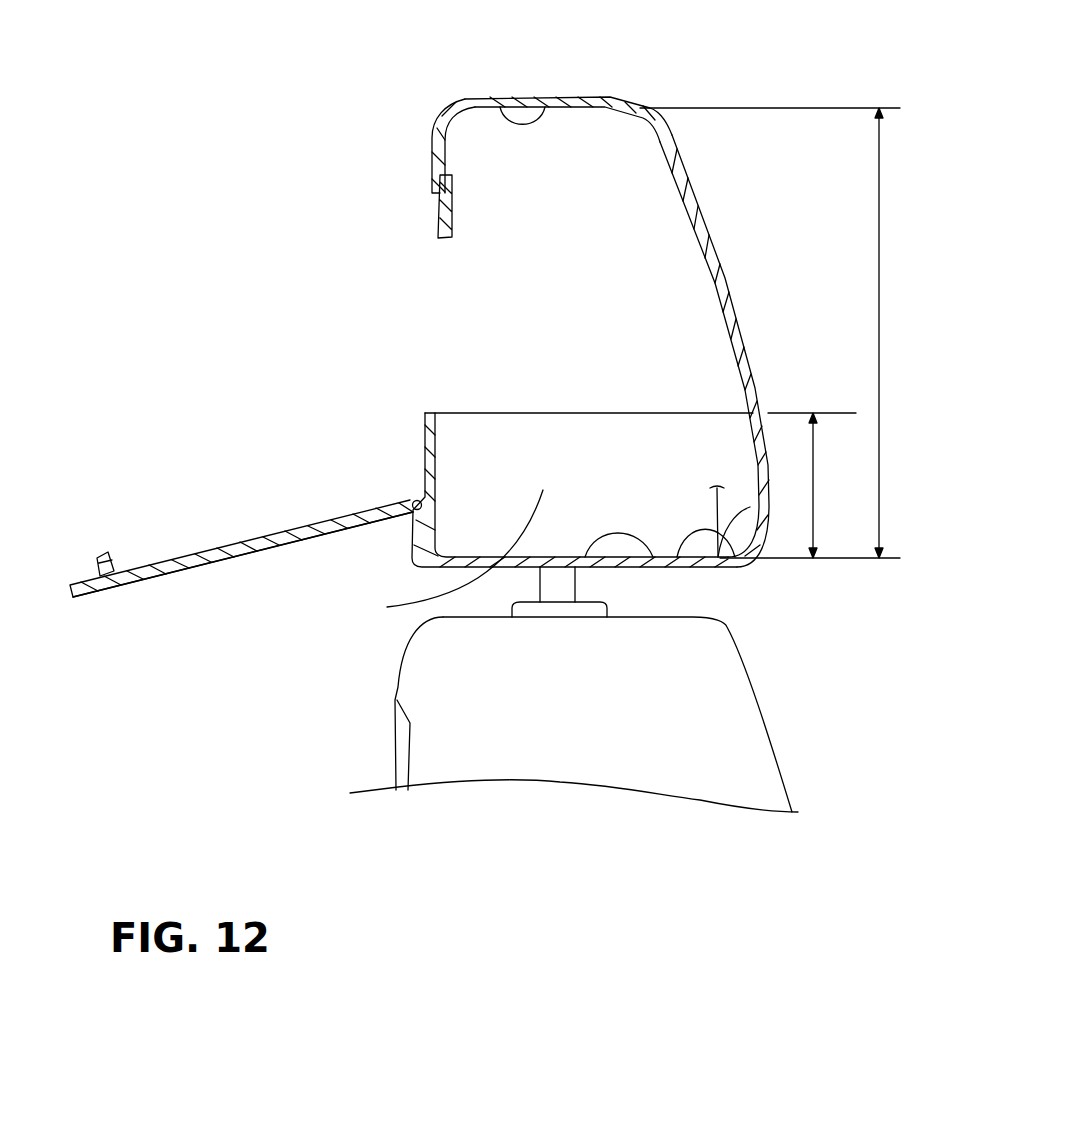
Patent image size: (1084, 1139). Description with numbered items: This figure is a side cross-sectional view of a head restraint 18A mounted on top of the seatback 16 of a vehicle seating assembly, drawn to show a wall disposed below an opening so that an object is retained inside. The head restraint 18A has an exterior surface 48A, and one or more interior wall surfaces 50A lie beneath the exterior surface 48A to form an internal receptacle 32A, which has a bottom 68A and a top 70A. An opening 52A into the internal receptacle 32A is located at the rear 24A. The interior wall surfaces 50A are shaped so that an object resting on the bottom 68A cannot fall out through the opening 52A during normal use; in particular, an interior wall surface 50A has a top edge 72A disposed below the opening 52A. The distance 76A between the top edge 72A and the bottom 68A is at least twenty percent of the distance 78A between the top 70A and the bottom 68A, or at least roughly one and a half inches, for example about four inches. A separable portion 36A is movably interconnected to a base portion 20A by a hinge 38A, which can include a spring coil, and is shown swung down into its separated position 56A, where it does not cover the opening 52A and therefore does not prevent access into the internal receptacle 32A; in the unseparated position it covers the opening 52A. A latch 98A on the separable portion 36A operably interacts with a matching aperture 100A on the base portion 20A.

The seatback 16 is at (713, 723).
The head restraint 18A is at (591, 91).
The base portion 20A is at (737, 294).
The rear 24A is at (425, 433).
The internal receptacle 32A is at (441, 555).
The separable portion 36A is at (223, 542).
The hinge 38A is at (410, 500).
The exterior surface 48A is at (686, 161).
The interior wall surfaces 50A is at (732, 567).
The opening 52A is at (426, 303).
The separated position 56A is at (115, 601).
The bottom 68A is at (650, 567).
The top 70A is at (500, 104).
The top edge 72A is at (432, 412).
The distance 76A is at (813, 513).
The distance 78A is at (881, 346).
The latch 98A is at (117, 555).
The aperture 100A is at (441, 208).